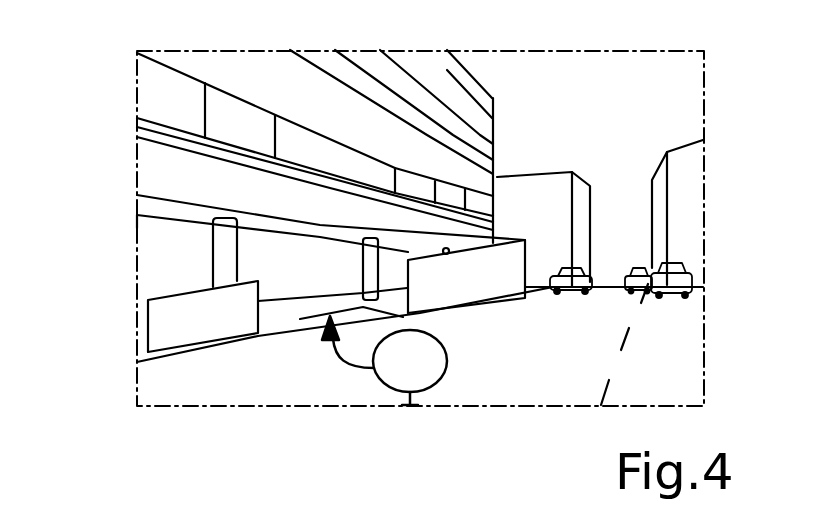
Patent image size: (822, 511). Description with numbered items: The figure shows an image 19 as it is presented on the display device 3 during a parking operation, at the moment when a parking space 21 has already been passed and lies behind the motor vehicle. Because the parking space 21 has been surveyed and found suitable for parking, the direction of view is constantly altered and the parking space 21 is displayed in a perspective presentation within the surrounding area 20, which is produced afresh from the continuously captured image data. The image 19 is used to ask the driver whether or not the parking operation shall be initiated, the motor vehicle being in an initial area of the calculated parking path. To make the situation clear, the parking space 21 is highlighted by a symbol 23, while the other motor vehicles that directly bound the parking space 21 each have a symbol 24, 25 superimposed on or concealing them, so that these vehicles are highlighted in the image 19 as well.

The display device 3 is at (706, 232).
The image 19 is at (661, 114).
The surrounding area 20 is at (490, 373).
The parking space 21 is at (305, 337).
The symbol 23 is at (301, 323).
The symbol 24 is at (170, 322).
The symbol 25 is at (503, 263).